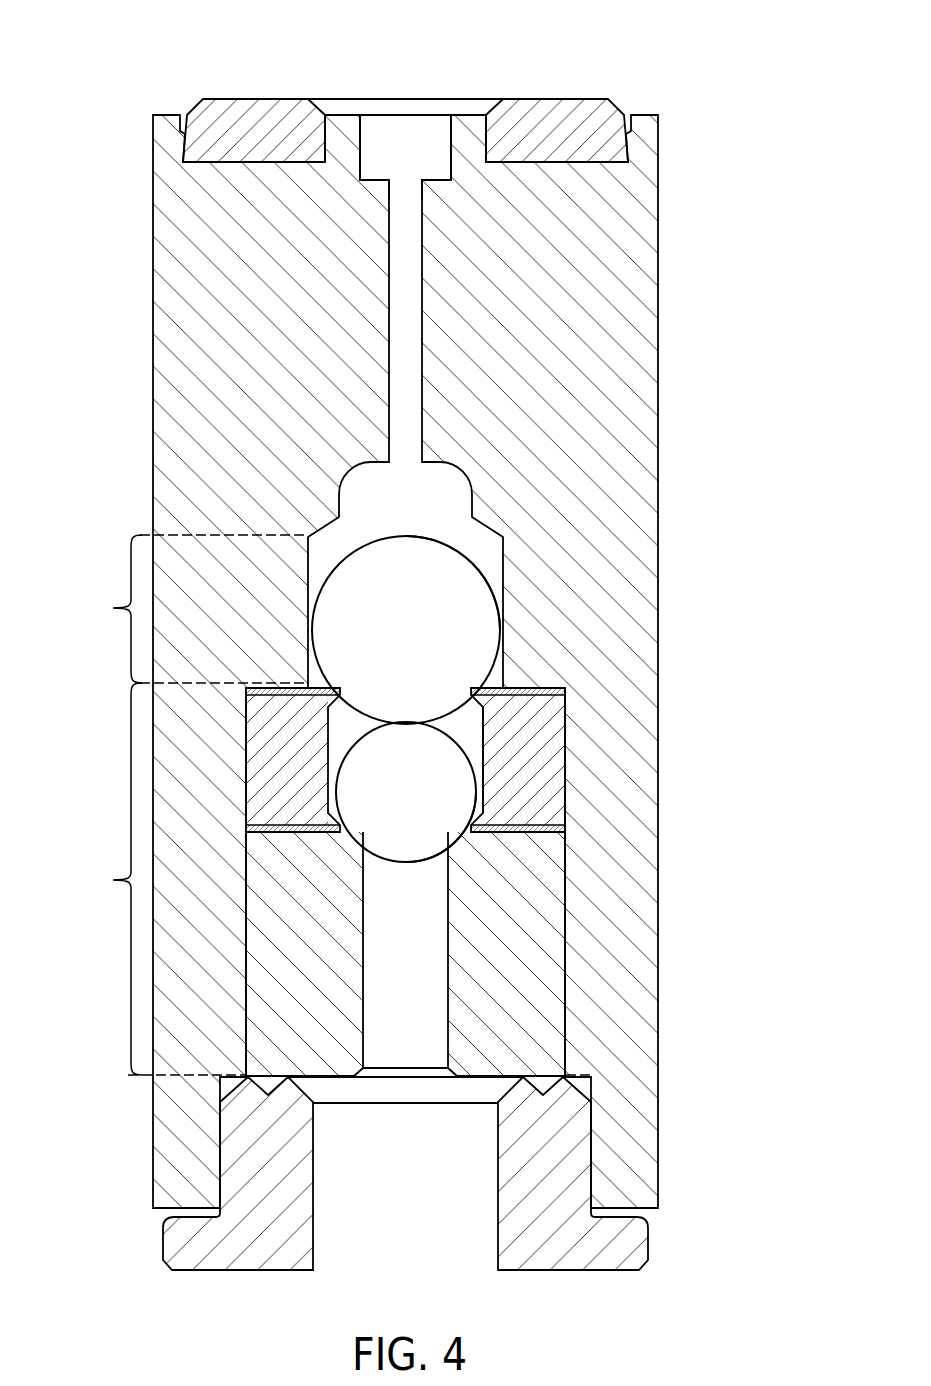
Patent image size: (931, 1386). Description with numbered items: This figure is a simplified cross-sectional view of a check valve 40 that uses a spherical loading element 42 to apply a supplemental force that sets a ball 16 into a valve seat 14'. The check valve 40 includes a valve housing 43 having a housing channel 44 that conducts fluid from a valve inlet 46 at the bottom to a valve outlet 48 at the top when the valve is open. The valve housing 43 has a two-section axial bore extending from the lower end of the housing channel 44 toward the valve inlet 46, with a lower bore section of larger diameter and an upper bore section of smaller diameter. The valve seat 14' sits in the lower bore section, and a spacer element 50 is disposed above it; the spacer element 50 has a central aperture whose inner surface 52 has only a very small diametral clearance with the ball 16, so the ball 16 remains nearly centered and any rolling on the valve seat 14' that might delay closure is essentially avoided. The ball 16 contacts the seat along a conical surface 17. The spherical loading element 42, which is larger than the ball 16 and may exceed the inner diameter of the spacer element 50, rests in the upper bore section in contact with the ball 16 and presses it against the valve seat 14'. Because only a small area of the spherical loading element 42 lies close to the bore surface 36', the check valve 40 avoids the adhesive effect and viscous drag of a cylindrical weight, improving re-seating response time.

The check valve 40 is at (438, 658).
The valve housing 43 is at (153, 524).
The valve outlet 48 is at (407, 82).
The housing channel 44 is at (389, 190).
The spherical loading element 42 is at (421, 641).
The bore surface 36' is at (453, 583).
The spacer element 50 is at (246, 764).
The inner surface 52 is at (472, 727).
The ball 16 is at (421, 809).
The conical surface 17 is at (445, 834).
The valve seat 14' is at (376, 954).
The valve inlet 46 is at (372, 1284).